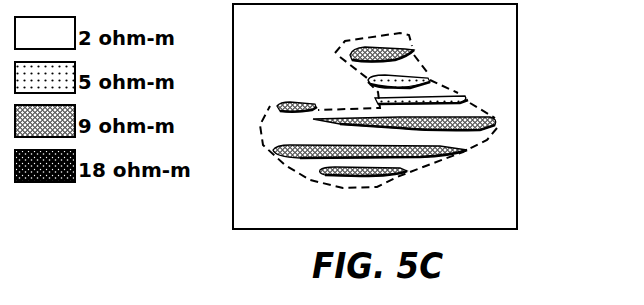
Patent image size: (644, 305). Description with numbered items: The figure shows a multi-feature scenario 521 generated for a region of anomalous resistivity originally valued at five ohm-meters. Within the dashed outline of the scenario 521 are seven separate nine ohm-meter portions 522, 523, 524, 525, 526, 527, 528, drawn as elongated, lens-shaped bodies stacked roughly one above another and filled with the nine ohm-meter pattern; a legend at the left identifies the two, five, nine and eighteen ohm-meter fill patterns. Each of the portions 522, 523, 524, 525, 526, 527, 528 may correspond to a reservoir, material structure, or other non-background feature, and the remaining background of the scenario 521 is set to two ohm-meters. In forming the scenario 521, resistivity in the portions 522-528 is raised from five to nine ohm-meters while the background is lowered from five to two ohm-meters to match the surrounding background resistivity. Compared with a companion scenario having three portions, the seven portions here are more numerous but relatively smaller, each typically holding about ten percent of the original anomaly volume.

The scenario 521 is at (350, 68).
The 9 ohm-m portion 522 is at (372, 47).
The 9 ohm-m portion 523 is at (403, 74).
The 9 ohm-m portion 524 is at (458, 93).
The 9 ohm-m portion 525 is at (300, 103).
The 9 ohm-m portion 526 is at (477, 114).
The 9 ohm-m portion 527 is at (342, 147).
The 9 ohm-m portion 528 is at (337, 177).